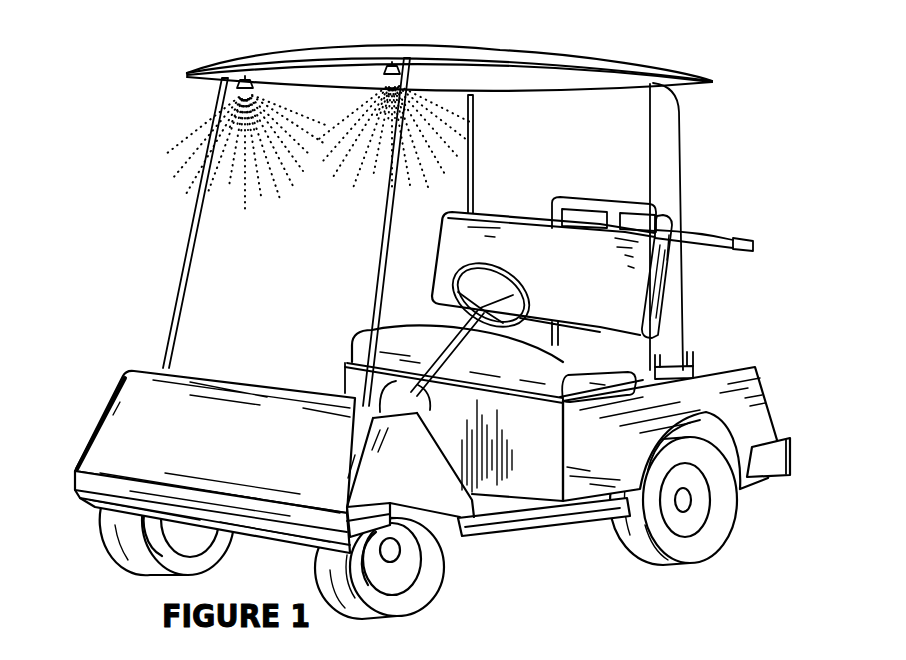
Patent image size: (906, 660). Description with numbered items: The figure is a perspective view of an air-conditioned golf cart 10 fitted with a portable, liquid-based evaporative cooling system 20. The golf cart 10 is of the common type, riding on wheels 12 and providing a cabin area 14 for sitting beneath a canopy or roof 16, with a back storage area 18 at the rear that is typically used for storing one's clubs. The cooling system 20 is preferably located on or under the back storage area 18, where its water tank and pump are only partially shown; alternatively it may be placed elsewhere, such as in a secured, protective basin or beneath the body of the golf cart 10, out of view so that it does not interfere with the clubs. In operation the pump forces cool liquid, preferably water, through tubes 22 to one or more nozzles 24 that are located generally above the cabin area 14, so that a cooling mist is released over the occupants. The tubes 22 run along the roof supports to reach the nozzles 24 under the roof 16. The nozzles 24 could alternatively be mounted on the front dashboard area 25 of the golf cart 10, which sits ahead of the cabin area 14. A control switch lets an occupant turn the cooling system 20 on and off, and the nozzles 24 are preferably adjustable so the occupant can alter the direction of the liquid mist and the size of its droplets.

The golf cart 10 is at (138, 203).
The wheels 12 is at (414, 585).
The cabin area 14 is at (240, 300).
The canopy or roof 16 is at (483, 46).
The back storage area 18 is at (750, 334).
The evaporative cooling system 20 is at (670, 362).
The tubes 22 is at (571, 78).
The nozzles 24 is at (370, 58).
The front dashboard area 25 is at (150, 411).